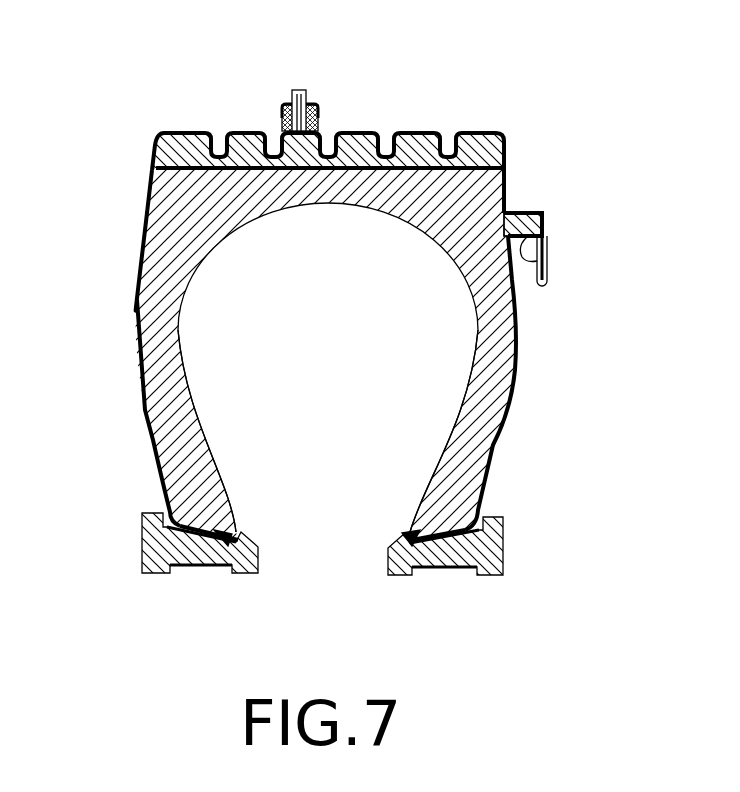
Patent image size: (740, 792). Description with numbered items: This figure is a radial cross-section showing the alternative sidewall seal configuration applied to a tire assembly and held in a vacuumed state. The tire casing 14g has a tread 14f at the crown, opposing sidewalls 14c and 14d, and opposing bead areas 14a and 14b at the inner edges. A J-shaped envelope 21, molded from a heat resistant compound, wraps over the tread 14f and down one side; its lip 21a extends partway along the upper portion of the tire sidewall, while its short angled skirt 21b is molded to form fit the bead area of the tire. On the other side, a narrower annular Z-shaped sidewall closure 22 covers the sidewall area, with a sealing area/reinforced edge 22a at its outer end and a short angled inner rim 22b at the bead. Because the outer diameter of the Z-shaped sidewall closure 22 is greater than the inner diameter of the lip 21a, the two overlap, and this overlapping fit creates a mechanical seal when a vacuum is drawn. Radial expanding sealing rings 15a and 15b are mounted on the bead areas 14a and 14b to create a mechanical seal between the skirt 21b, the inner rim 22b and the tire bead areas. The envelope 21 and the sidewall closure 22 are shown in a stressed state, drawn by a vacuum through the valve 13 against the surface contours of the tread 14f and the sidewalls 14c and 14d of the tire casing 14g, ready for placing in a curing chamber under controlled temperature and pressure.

The valve 13 is at (287, 97).
The bead area 14a is at (218, 520).
The bead area 14b is at (435, 523).
The sidewall 14c is at (153, 352).
The sidewall 14d is at (490, 373).
The tread 14f is at (490, 132).
The tire casing 14g is at (192, 240).
The radial expanding sealing ring 15a is at (152, 512).
The radial expanding sealing ring 15b is at (500, 517).
The J-shaped envelope 21 is at (150, 226).
The lip 21a is at (505, 210).
The short angled skirt 21b is at (232, 542).
The Z-shaped sidewall closure 22 is at (515, 338).
The sealing area/reinforced edge 22a is at (537, 261).
The short angled inner rim 22b is at (442, 543).